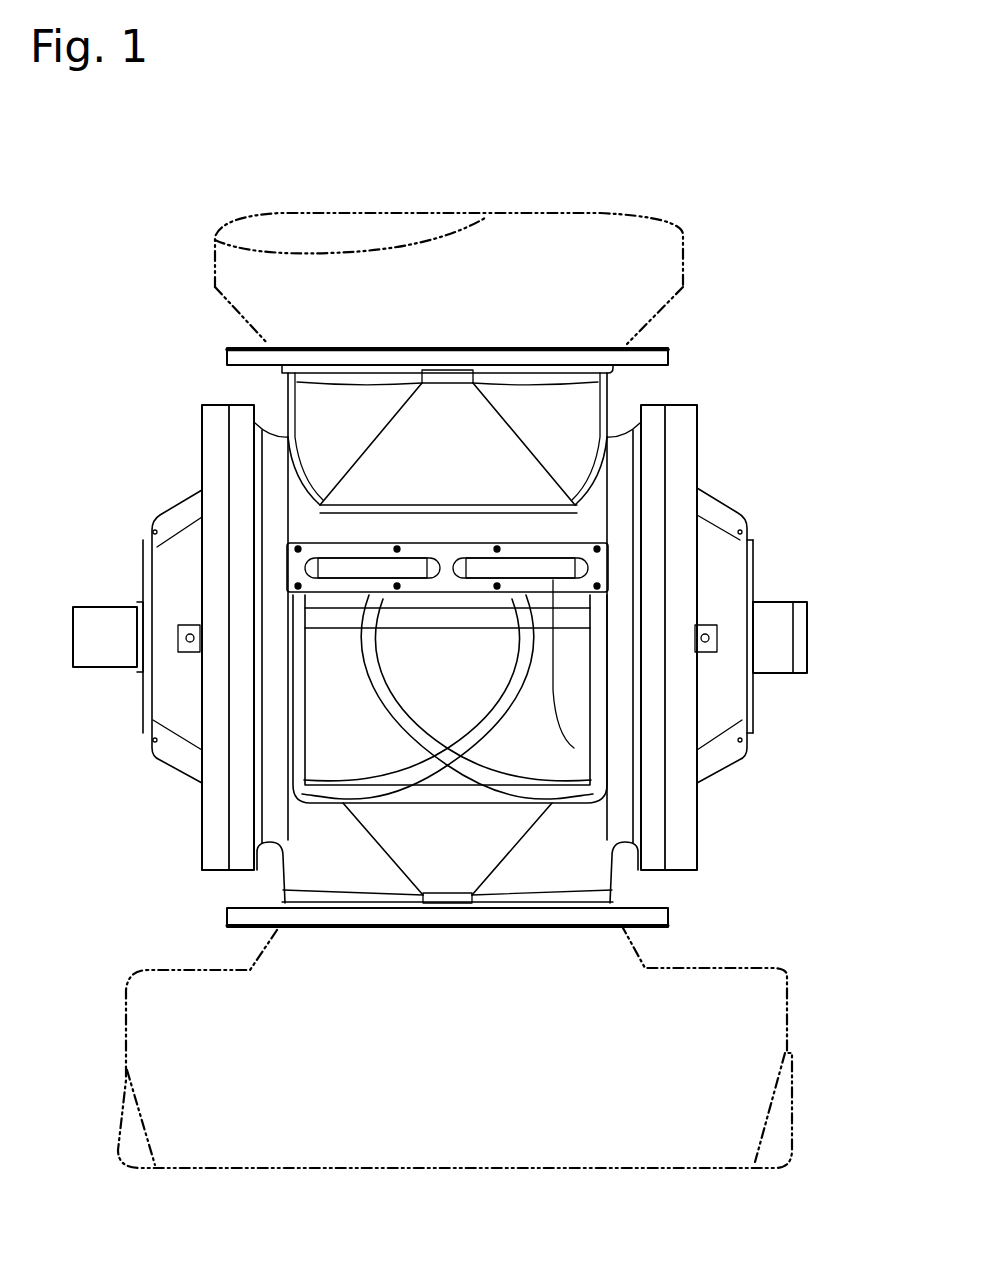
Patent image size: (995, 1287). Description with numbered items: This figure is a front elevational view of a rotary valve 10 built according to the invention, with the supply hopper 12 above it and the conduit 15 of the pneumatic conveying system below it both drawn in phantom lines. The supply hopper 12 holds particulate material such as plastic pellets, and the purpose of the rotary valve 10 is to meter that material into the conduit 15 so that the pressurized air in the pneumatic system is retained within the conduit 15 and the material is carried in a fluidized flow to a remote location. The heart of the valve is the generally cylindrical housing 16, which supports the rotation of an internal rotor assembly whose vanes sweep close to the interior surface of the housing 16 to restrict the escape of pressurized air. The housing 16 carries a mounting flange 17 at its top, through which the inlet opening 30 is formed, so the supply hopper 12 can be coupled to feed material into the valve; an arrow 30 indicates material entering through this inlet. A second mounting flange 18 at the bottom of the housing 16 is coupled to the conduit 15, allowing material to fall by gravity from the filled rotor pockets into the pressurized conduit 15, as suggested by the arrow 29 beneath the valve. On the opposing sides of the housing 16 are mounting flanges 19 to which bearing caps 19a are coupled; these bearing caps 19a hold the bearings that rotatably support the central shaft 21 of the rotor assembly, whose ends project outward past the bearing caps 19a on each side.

The rotary valve 10 is at (167, 303).
The supply hopper 12 is at (580, 238).
The conduit 15 is at (675, 1022).
The housing 16 is at (312, 863).
The mounting flange 17 is at (643, 362).
The mounting flange 18 is at (650, 920).
The mounting flanges 19 is at (648, 423).
The bearing caps 19a is at (205, 438).
The central shaft 21 is at (98, 625).
The outlet flow direction 29 is at (462, 940).
The inlet opening 30 is at (475, 322).